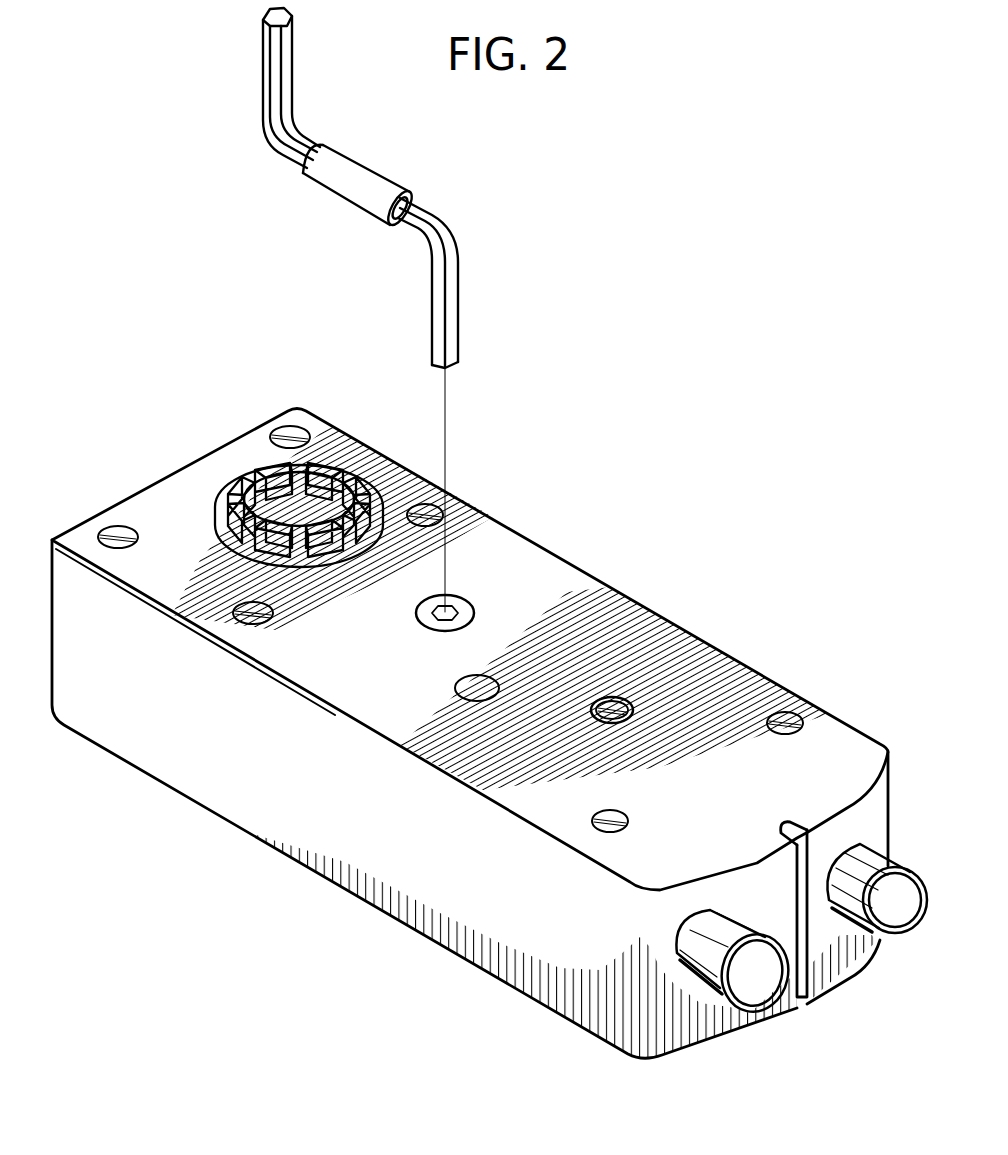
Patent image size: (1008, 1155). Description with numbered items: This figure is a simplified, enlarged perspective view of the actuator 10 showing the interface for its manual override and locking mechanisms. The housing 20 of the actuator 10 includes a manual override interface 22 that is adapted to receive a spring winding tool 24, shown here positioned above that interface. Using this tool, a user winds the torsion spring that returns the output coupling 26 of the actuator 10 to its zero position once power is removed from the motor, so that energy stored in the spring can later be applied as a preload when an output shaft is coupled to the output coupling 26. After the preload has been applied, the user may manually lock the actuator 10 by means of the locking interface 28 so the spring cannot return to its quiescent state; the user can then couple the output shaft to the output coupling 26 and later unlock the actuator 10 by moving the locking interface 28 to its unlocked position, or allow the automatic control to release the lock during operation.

The actuator 10 is at (757, 234).
The housing 20 is at (618, 612).
The manual override interface 22 is at (450, 608).
The spring winding tool 24 is at (441, 227).
The output coupling 26 is at (262, 468).
The locking interface 28 is at (624, 700).